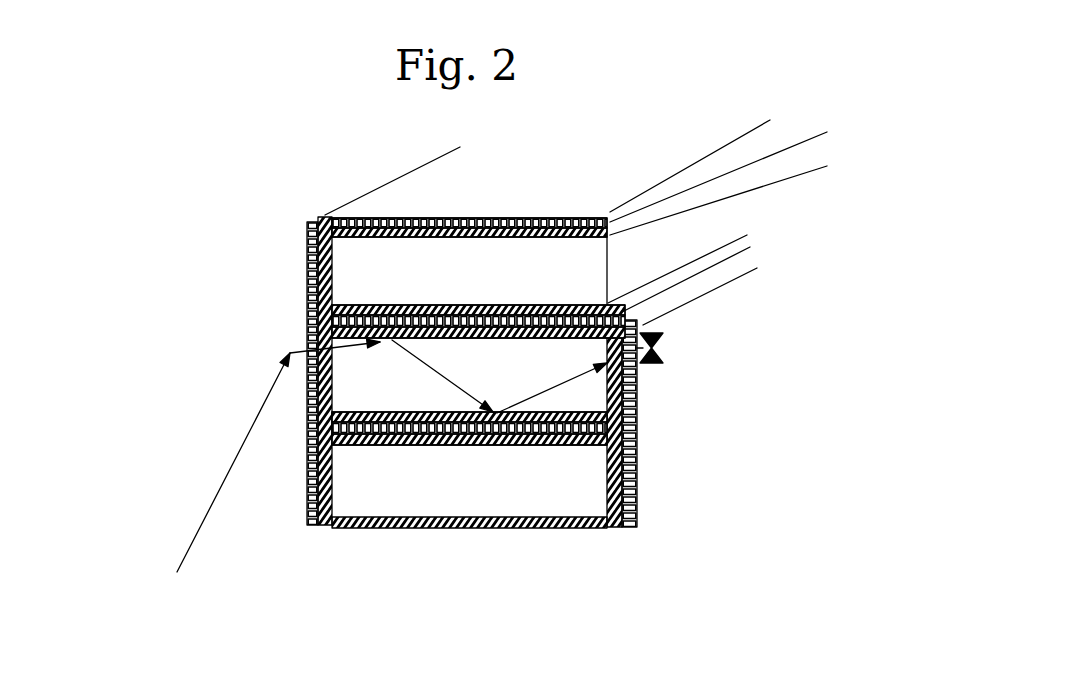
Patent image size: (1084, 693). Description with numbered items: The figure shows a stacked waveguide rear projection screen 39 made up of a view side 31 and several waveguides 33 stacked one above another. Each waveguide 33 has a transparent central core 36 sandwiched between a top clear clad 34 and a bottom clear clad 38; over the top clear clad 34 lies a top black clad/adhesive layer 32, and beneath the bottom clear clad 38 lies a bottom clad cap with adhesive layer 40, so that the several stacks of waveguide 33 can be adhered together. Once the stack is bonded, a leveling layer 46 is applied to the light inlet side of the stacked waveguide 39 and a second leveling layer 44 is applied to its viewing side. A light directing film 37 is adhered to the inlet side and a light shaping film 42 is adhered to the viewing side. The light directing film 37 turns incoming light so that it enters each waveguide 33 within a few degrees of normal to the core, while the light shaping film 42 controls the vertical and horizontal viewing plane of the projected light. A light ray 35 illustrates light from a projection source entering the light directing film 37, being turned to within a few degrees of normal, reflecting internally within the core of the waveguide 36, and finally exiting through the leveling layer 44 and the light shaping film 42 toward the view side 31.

The view side 31 is at (705, 363).
The top black clad/adhesive layer 32 is at (707, 162).
The waveguide 33 is at (777, 212).
The top clear clad 34 is at (733, 170).
The light ray 35 is at (260, 390).
The transparent central core 36 is at (700, 220).
The light directing film 37 is at (310, 238).
The bottom clear clad 38 is at (630, 298).
The stacked waveguide rear projection screen 39 is at (237, 293).
The bottom clad cap with adhesive layer 40 is at (733, 267).
The light shaping film 42 is at (637, 417).
The leveling layer 44 is at (640, 535).
The leveling layer 46 is at (320, 525).